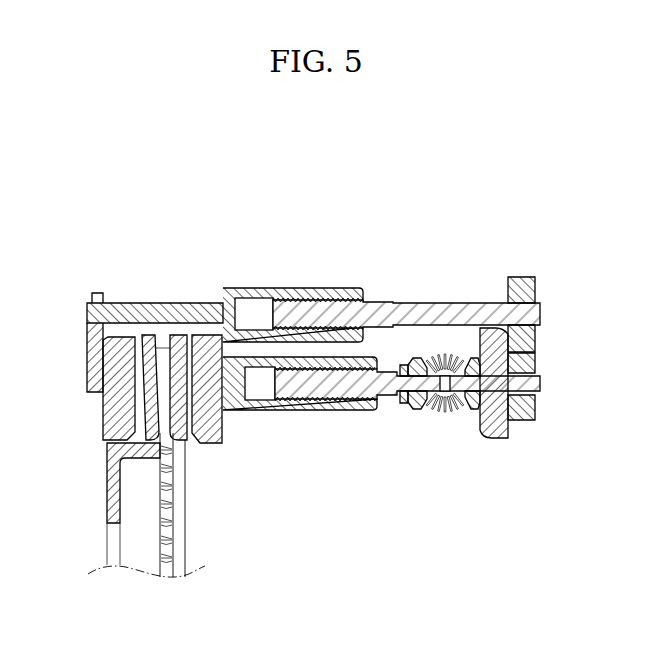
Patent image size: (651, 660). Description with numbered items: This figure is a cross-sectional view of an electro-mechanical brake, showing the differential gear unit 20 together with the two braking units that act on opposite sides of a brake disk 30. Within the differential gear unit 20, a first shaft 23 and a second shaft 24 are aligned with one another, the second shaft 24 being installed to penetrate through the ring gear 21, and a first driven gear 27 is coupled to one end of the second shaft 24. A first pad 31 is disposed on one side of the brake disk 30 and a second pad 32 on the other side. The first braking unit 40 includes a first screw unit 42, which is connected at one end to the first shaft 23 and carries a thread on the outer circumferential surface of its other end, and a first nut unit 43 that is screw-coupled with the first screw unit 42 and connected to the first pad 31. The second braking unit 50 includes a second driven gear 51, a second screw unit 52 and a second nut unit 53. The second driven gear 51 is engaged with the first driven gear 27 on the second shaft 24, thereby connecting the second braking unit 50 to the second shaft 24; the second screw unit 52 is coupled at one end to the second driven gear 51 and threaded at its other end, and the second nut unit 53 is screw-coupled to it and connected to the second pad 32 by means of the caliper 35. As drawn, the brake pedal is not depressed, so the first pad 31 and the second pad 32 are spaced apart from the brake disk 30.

The differential gear unit 20 is at (448, 424).
The ring gear 21 is at (488, 440).
The first shaft 23 is at (417, 403).
The second shaft 24 is at (518, 420).
The first driven gear 27 is at (523, 360).
The brake disk 30 is at (110, 480).
The first pad 31 is at (218, 432).
The second pad 32 is at (113, 415).
The caliper 35 is at (153, 318).
The first braking unit 40 is at (381, 436).
The first screw unit 42 is at (357, 382).
The first nut unit 43 is at (315, 410).
The second braking unit 50 is at (381, 249).
The second driven gear 51 is at (519, 272).
The second screw unit 52 is at (412, 310).
The second nut unit 53 is at (313, 287).